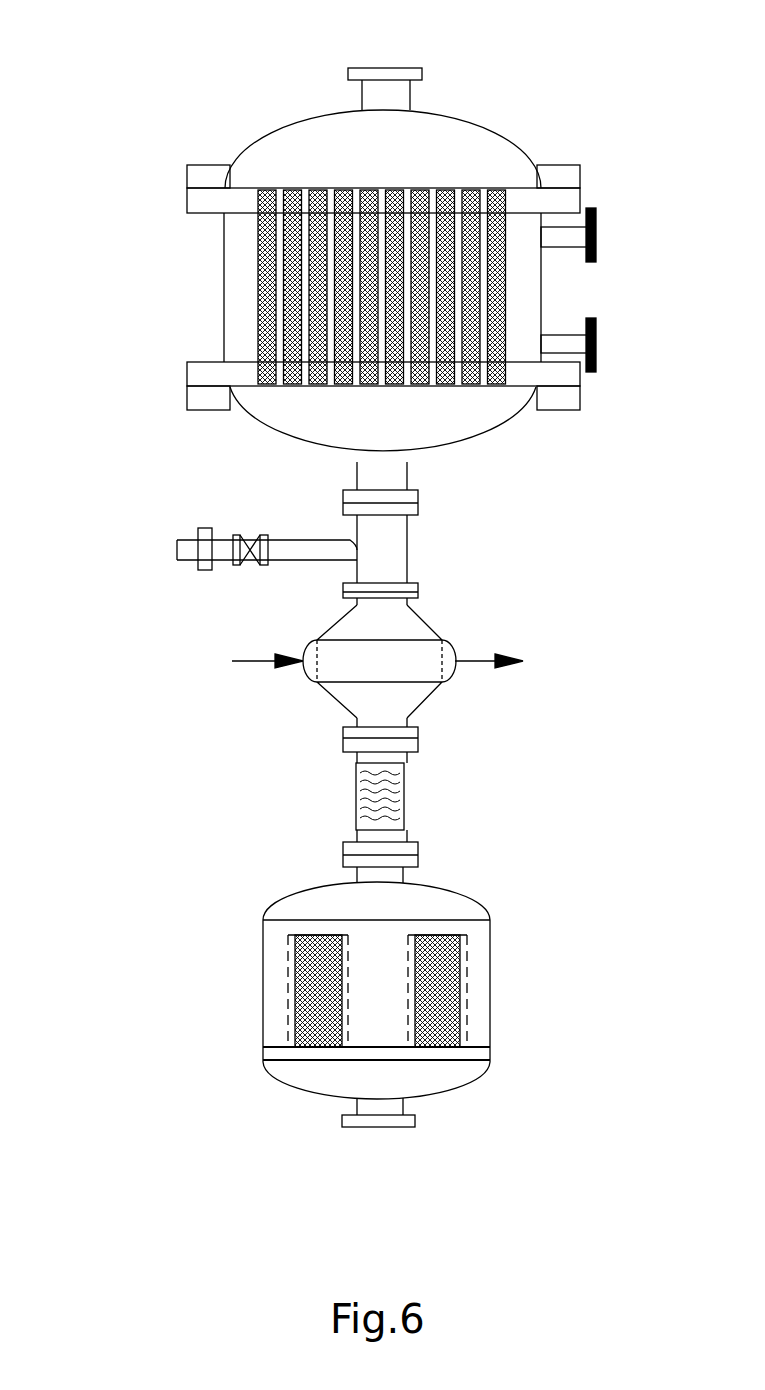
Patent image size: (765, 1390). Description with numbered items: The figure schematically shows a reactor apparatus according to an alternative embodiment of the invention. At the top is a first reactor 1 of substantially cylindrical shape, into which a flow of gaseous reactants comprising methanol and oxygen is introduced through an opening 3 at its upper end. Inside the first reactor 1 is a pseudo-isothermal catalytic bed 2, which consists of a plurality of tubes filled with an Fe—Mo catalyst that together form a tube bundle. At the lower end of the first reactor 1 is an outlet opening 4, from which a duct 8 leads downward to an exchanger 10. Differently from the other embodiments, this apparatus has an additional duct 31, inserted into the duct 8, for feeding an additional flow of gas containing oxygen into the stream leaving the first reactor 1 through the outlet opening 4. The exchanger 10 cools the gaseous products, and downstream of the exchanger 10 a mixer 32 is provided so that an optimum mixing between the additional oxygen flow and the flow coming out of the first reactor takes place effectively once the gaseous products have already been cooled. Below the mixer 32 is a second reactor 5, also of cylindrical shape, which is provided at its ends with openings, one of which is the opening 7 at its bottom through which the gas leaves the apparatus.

The first reactor 1 is at (153, 196).
The pseudo-isothermal catalytic bed 2 is at (237, 293).
The opening 3 is at (388, 68).
The outlet opening 4 is at (418, 493).
The reactor 5 is at (150, 906).
The opening 7 is at (383, 1128).
The duct 8 is at (407, 551).
The exchanger 10 is at (430, 697).
The duct 31 is at (185, 537).
The mixer 32 is at (404, 800).